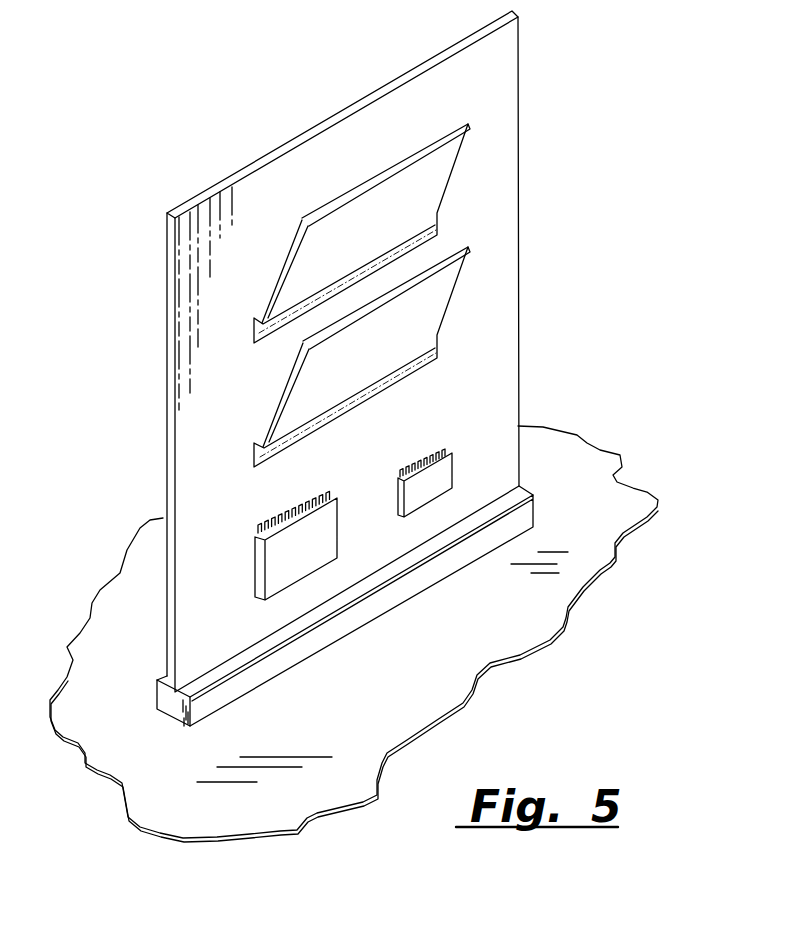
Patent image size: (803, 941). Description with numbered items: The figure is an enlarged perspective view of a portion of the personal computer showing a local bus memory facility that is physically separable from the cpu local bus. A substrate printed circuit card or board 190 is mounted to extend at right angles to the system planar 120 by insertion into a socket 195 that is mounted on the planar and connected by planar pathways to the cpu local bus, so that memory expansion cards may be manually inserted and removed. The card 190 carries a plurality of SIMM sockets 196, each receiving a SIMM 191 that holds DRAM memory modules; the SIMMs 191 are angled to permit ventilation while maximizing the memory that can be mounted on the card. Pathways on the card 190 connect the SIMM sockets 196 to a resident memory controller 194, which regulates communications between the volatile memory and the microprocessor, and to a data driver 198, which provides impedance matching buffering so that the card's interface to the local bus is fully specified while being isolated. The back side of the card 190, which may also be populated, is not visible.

The system planar 120 is at (636, 500).
The substrate printed circuit card or board 190 is at (167, 485).
The SIMM 191 is at (288, 252).
The memory controller 194 is at (293, 514).
The socket 195 is at (168, 704).
The SIMM socket 196 is at (256, 345).
The data driver 198 is at (444, 452).